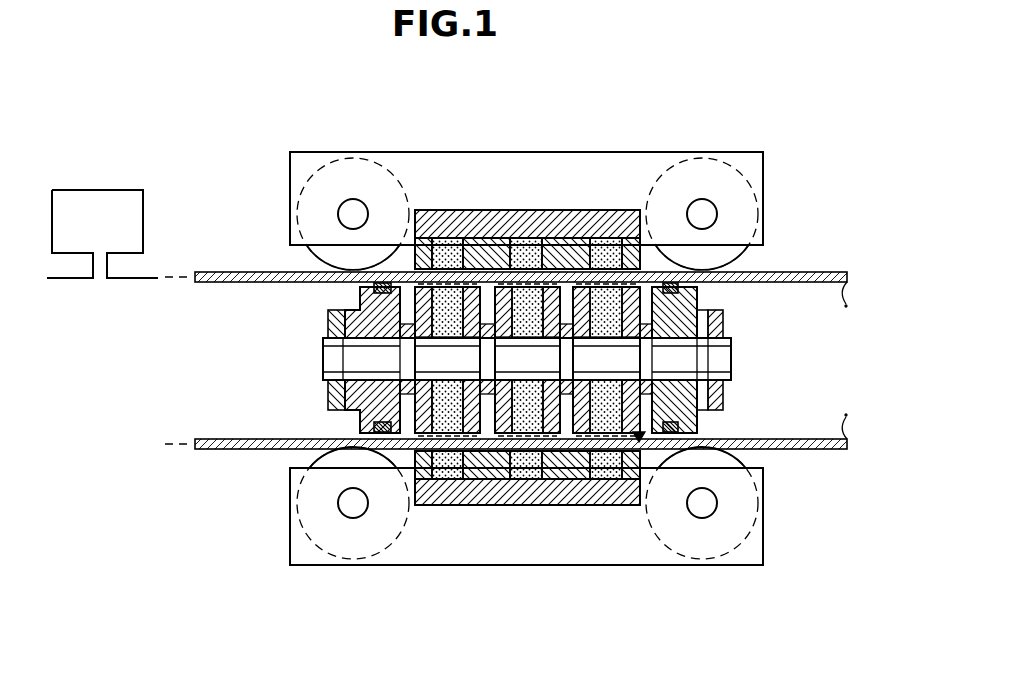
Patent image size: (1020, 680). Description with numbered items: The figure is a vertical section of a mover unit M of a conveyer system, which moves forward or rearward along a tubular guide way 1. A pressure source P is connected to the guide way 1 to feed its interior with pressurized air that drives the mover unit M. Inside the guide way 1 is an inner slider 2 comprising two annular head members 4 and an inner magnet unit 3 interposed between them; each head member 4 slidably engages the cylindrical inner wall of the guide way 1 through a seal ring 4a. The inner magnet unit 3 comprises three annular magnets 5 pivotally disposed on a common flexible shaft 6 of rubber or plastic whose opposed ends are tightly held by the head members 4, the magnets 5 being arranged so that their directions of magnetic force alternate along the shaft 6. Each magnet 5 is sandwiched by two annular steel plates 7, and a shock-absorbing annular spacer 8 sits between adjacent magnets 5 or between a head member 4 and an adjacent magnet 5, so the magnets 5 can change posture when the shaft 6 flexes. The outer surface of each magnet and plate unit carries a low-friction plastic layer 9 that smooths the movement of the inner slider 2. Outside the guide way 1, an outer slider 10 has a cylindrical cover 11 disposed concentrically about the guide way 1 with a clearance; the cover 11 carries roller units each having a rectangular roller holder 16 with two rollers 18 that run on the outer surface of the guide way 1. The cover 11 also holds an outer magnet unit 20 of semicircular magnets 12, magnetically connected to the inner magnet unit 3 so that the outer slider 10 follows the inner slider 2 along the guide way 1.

The pressure source P is at (105, 190).
The tubular guide way 1 is at (221, 272).
The inner slider 2 is at (530, 361).
The inner magnet unit 3 is at (635, 450).
The annular head member 4 is at (724, 317).
The seal ring 4a is at (674, 283).
The annular magnet 5 is at (647, 275).
The flexible shaft 6 is at (323, 359).
The annular steel plate 7 is at (650, 450).
The annular spacer 8 is at (520, 232).
The lower friction plastic layer 9 is at (455, 242).
The outer slider 10 is at (742, 570).
The cylindrical cover 11 is at (472, 215).
The semicircular magnet 12 is at (607, 240).
The roller holder 16 is at (575, 238).
The roller 18 is at (313, 175).
The outer magnet unit 20 is at (485, 505).
The mover unit M is at (770, 148).